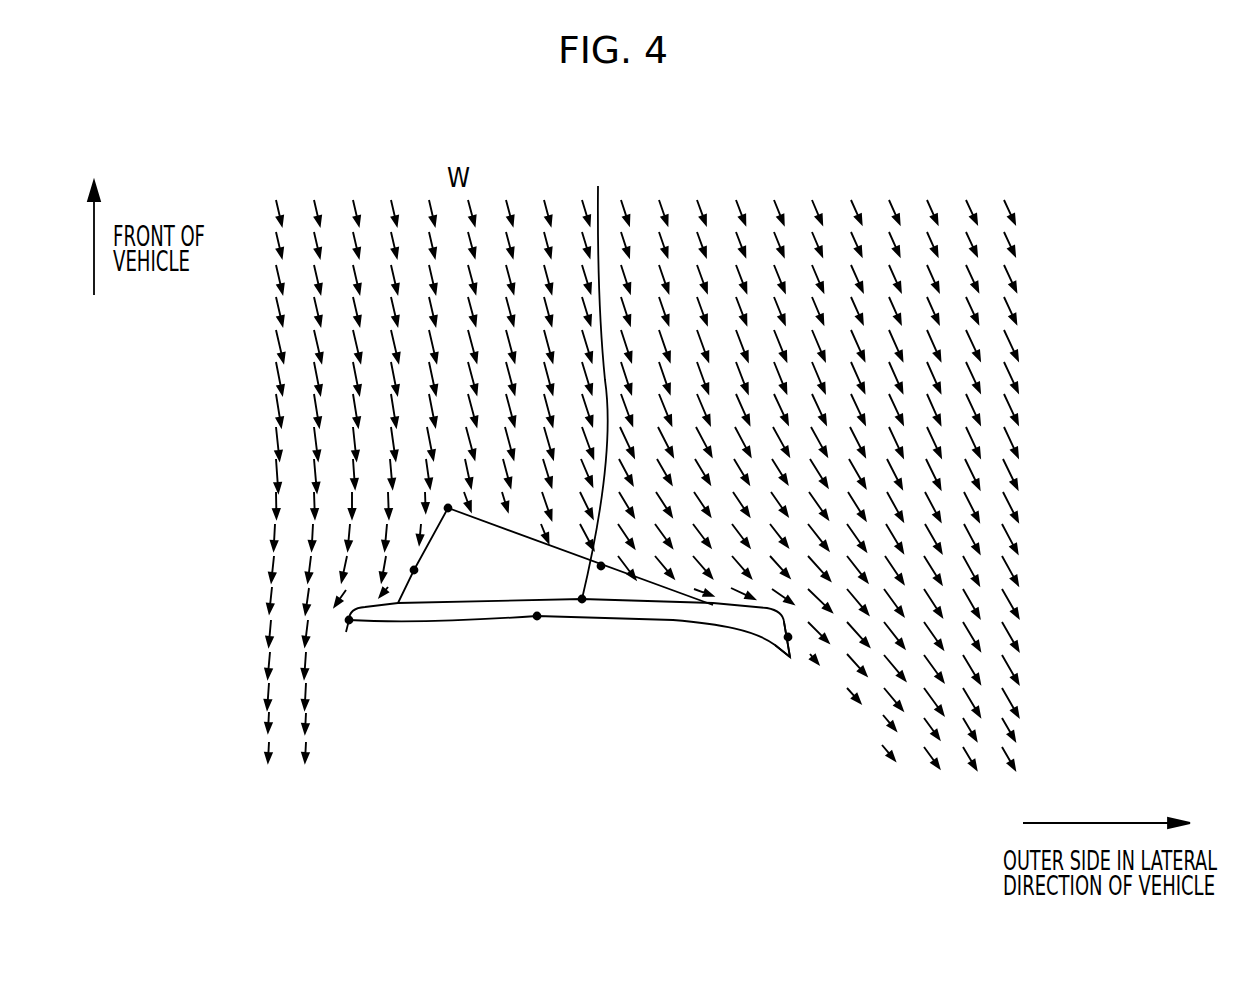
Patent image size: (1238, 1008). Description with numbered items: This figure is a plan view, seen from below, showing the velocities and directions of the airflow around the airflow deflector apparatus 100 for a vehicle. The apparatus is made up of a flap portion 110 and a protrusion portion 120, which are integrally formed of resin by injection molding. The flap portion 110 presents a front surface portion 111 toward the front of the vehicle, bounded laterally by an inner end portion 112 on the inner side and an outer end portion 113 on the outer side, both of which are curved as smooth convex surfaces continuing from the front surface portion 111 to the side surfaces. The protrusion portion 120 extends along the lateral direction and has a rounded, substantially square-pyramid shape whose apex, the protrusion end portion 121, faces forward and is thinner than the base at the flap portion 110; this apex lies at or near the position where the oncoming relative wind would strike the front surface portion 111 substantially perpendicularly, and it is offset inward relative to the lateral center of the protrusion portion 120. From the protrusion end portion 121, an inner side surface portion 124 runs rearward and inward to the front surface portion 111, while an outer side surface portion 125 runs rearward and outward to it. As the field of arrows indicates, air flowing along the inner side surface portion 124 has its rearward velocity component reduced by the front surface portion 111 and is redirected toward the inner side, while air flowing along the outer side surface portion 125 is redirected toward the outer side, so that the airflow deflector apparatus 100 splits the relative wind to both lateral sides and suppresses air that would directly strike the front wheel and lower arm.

The airflow deflector apparatus 100 is at (468, 660).
The flap portion 110 is at (537, 617).
The front surface portion 111 is at (598, 381).
The inner end portion 112 is at (348, 624).
The outer end portion 113 is at (788, 637).
The protrusion portion 120 is at (414, 548).
The protrusion end portion 121 is at (448, 508).
The inner side surface portion 124 is at (414, 570).
The outer side surface portion 125 is at (601, 566).